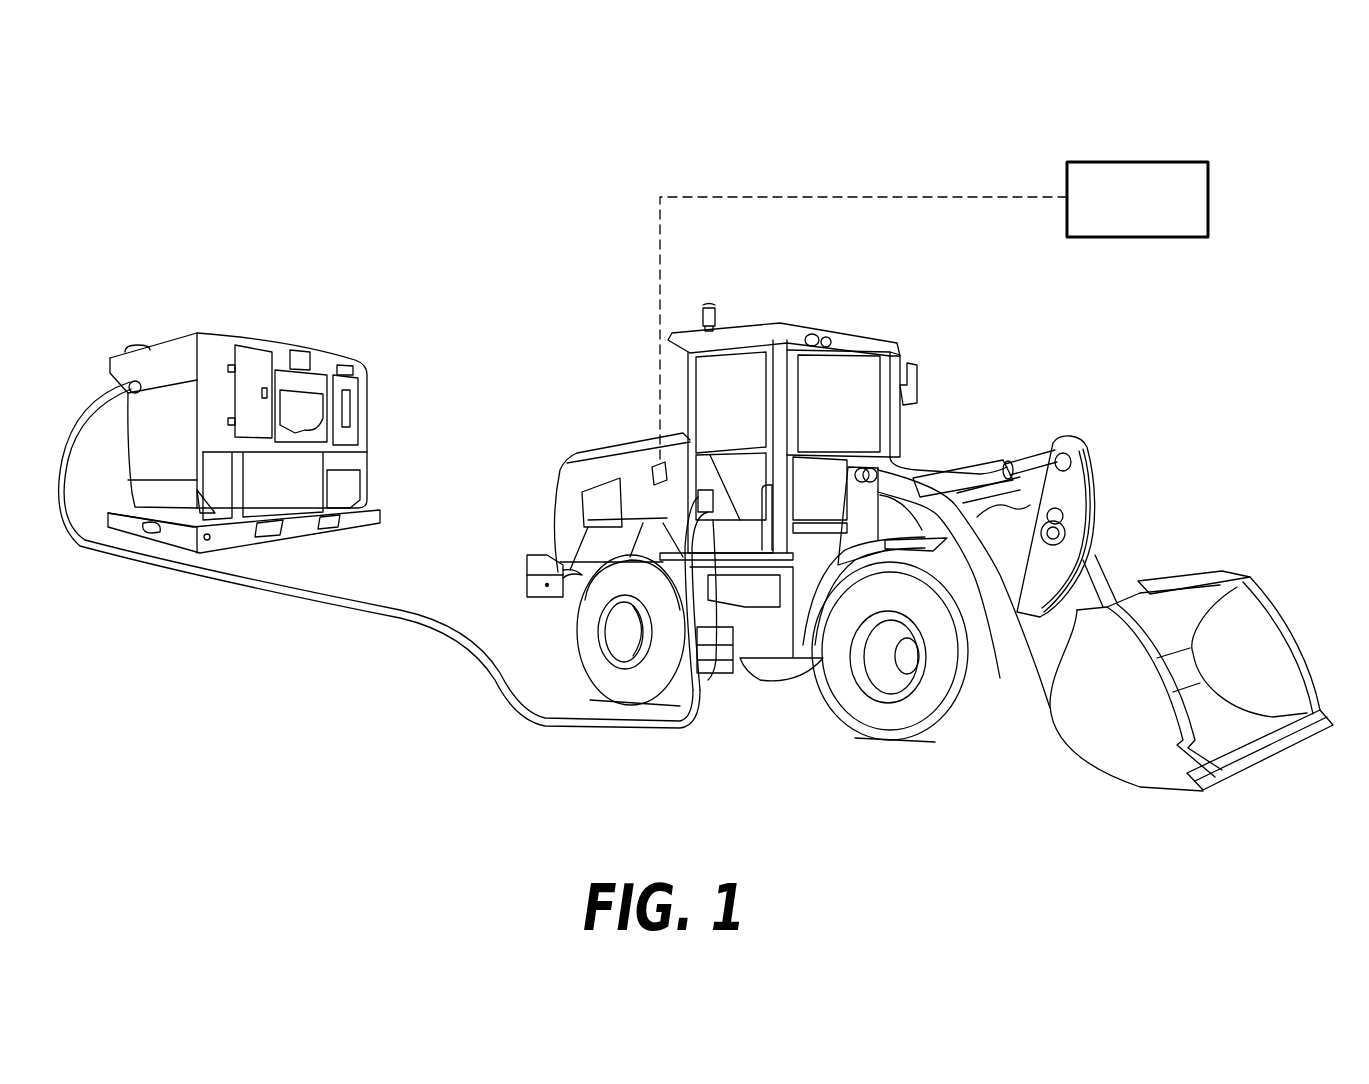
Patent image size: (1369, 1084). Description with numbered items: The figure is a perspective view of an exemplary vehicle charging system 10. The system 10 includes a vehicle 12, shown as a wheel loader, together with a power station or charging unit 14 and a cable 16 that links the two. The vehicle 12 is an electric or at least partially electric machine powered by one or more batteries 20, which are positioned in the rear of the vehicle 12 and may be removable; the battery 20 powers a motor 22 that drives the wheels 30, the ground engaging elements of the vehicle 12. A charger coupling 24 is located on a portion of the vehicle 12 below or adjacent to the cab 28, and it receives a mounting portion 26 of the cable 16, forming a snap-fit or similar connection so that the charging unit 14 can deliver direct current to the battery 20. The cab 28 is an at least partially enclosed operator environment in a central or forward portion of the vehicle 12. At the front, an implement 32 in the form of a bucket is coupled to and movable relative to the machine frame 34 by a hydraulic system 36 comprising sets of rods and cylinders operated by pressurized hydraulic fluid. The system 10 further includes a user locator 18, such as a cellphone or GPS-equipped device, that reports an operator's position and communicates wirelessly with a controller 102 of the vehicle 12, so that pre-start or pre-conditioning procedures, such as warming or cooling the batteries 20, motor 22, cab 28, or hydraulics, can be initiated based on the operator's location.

The system 10 is at (136, 141).
The vehicle 12 is at (808, 292).
The charging unit 14 is at (247, 334).
The cable 16 is at (93, 543).
The user locator 18 is at (1208, 197).
The battery 20 is at (597, 483).
The motor 22 is at (567, 578).
The charger coupling 24 is at (707, 670).
The mounting portion 26 is at (698, 492).
The cab 28 is at (847, 375).
The wheels 30 is at (598, 678).
The implement 32 is at (1240, 565).
The machine frame 34 is at (897, 457).
The hydraulic system 36 is at (1014, 441).
The controller 102 is at (657, 468).